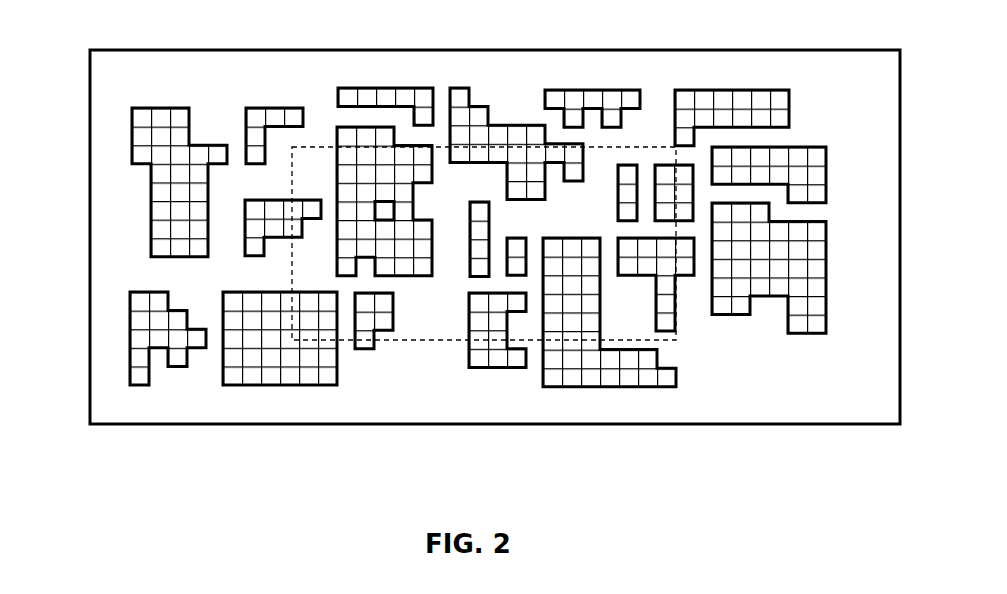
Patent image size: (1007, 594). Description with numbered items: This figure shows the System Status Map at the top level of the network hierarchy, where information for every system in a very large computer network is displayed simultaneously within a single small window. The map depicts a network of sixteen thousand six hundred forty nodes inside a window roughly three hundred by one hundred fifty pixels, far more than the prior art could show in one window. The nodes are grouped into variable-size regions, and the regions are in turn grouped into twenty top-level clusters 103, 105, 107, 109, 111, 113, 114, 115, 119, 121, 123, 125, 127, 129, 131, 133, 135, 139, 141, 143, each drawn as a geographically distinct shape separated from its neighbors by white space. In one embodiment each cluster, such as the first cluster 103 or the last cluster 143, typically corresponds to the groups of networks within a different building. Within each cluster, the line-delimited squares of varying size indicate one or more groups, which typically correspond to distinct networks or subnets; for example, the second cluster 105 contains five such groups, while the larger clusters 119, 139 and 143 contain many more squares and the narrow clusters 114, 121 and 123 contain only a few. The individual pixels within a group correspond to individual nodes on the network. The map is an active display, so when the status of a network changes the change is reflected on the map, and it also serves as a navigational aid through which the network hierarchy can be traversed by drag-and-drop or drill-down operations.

The top-level cluster 103 is at (125, 153).
The second cluster 105 is at (262, 103).
The top-level cluster 107 is at (362, 82).
The top-level cluster 109 is at (460, 82).
The top-level cluster 111 is at (575, 85).
The top-level cluster 113 is at (707, 86).
The top-level cluster 114 is at (468, 235).
The top-level cluster 115 is at (278, 200).
The top-level cluster 119 is at (422, 205).
The top-level cluster 121 is at (512, 237).
The top-level cluster 123 is at (625, 158).
The top-level cluster 125 is at (660, 160).
The top-level cluster 127 is at (800, 140).
The top-level cluster 129 is at (155, 295).
The top-level cluster 131 is at (338, 378).
The top-level cluster 133 is at (388, 338).
The top-level cluster 135 is at (490, 374).
The top-level cluster 139 is at (683, 377).
The top-level cluster 141 is at (683, 323).
The top-level cluster 143 is at (808, 340).